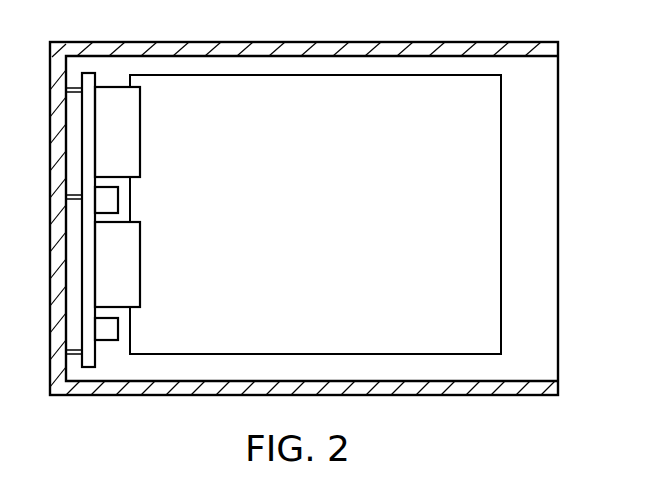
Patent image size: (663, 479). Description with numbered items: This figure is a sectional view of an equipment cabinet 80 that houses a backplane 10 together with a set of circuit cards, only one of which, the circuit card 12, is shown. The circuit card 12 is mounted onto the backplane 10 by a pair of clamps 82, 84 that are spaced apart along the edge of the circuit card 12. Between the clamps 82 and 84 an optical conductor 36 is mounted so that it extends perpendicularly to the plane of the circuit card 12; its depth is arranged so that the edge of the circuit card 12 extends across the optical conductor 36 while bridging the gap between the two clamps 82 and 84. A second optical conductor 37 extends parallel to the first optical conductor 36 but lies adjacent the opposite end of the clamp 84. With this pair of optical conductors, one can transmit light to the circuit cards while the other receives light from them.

The backplane 10 is at (88, 80).
The circuit card 12 is at (501, 323).
The optical conductor 36 is at (113, 200).
The second optical conductor 37 is at (110, 330).
The equipment cabinet 80 is at (539, 130).
The clamp 82 is at (140, 130).
The clamp 84 is at (140, 270).